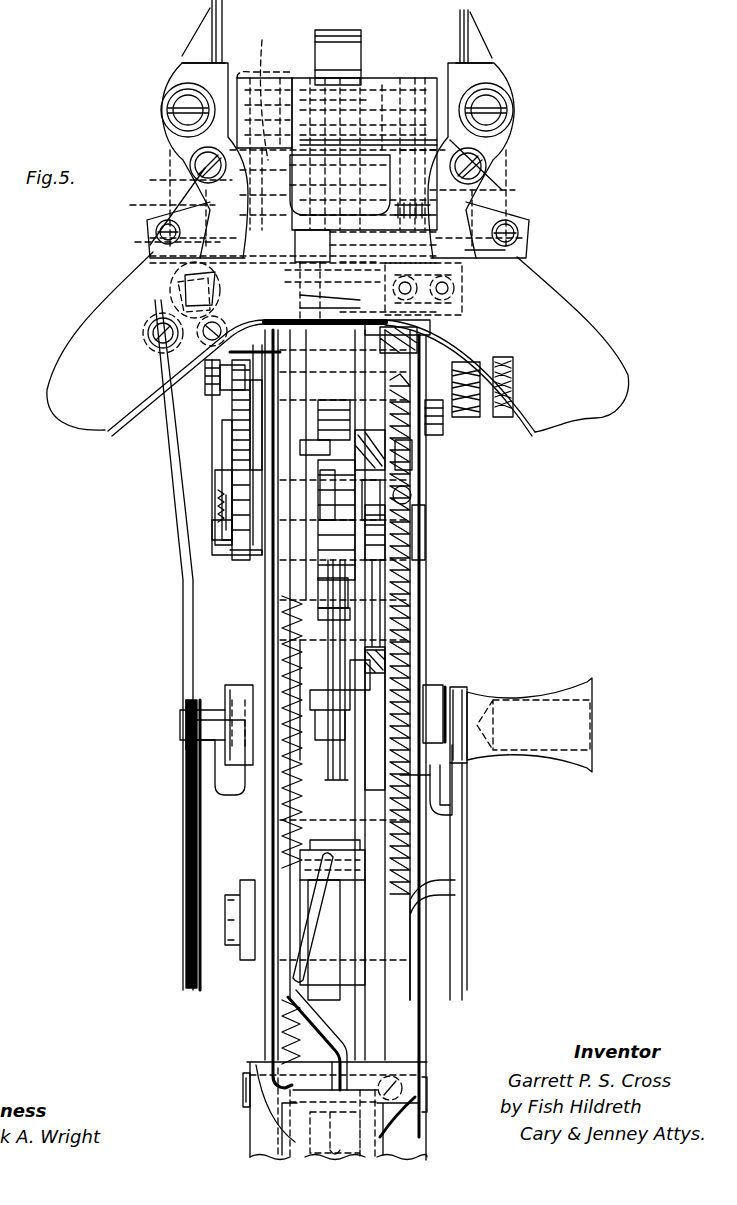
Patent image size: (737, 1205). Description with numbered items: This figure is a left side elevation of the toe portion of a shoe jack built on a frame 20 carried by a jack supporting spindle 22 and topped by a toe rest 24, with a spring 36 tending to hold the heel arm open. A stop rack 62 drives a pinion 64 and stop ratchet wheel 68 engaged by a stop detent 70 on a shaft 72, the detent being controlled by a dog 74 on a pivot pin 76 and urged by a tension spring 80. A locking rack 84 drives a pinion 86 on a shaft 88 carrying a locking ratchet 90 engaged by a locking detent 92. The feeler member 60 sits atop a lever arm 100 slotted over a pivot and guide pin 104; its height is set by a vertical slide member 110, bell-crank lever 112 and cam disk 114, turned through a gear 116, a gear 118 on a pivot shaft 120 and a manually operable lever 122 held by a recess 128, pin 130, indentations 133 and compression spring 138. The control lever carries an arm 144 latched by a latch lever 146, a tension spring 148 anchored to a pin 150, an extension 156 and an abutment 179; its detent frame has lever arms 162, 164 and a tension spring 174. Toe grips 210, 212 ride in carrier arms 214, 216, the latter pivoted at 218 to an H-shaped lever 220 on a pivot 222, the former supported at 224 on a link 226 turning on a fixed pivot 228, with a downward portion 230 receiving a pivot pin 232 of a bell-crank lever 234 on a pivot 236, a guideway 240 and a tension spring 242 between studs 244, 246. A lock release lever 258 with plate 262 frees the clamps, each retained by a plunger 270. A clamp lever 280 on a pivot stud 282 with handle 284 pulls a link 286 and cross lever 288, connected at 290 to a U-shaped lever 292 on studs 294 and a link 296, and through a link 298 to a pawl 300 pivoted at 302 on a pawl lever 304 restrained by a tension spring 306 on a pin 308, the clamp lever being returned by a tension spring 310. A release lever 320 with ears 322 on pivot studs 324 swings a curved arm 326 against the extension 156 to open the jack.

The frame 20 is at (420, 647).
The jack supporting spindle 22 is at (268, 1130).
The toe rest 24 is at (385, 112).
The spring 36 is at (318, 1032).
The feeler member 60 is at (361, 42).
The stop rack 62 is at (408, 497).
The pinion 64 is at (410, 452).
The stop ratchet wheel 68 is at (445, 430).
The stop detent 70 is at (440, 357).
The shaft 72 is at (513, 422).
The dog 74 is at (445, 324).
The pivot pin 76 is at (455, 307).
The tension spring 80 is at (462, 294).
The locking rack 84 is at (420, 620).
The pinion 86 is at (410, 507).
The shaft 88 is at (420, 542).
The locking ratchet 90 is at (330, 496).
The locking detent 92 is at (322, 478).
The lever arm 100 is at (325, 85).
The pivot and guide pin 104 is at (372, 197).
The vertical slide member 110 is at (300, 248).
The bell-crank lever 112 is at (300, 264).
The cam disk 114 is at (445, 374).
The gear 116 is at (232, 422).
The gear 118 is at (225, 467).
The pivot shaft 120 is at (250, 432).
The manually operable lever 122 is at (212, 544).
The elongated recess 128 is at (218, 501).
The pin 130 is at (212, 531).
The indentations 133 is at (222, 477).
The compression spring 138 is at (220, 516).
The arm 144 is at (330, 312).
The latch lever 146 is at (360, 248).
The tension spring 148 is at (410, 480).
The pin 150 is at (412, 522).
The extension 156 is at (448, 334).
The lever arm 162 is at (412, 457).
The lever arm 164 is at (220, 396).
The tension spring 174 is at (320, 447).
The abutment 179 is at (205, 380).
The toe grip 210 is at (478, 50).
The toe grip 212 is at (200, 30).
The toe grip carrier arm 214 is at (495, 152).
The toe grip carrier arm 216 is at (182, 155).
The pivot 218 is at (195, 173).
The H-shaped lever 220 is at (178, 191).
The pivot 222 is at (156, 242).
The support 224 is at (482, 165).
The lever arm or link 226 is at (486, 182).
The fixed pivot 228 is at (518, 240).
The downwardly extending portion 230 is at (160, 208).
The pivot pin 232 is at (180, 289).
The bell-crank lever 234 is at (180, 306).
The pivot 236 is at (146, 323).
The guideway 240 is at (505, 195).
The tension spring 242 is at (345, 92).
The stud 244 is at (397, 97).
The stud 246 is at (270, 80).
The lock release lever 258 is at (200, 345).
The plate 262 is at (365, 220).
The plunger 270 is at (170, 101).
The clamp lever 280 is at (462, 827).
The pivot stud 282 is at (448, 932).
The handle 284 is at (580, 724).
The link 286 is at (315, 840).
The cross lever 288 is at (315, 692).
The pivotal connection 290 is at (455, 774).
The U-shaped lever 292 is at (222, 784).
The studs 294 is at (222, 697).
The link 296 is at (183, 663).
The link 298 is at (328, 652).
The pawl 300 is at (280, 630).
The pivot 302 is at (315, 582).
The pawl lever 304 is at (318, 602).
The tension spring 306 is at (300, 670).
The pin 308 is at (243, 1084).
The tension spring 310 is at (425, 670).
The release lever 320 is at (62, 396).
The ears 322 is at (156, 226).
The pivot studs 324 is at (160, 258).
The curved arm 326 is at (522, 264).